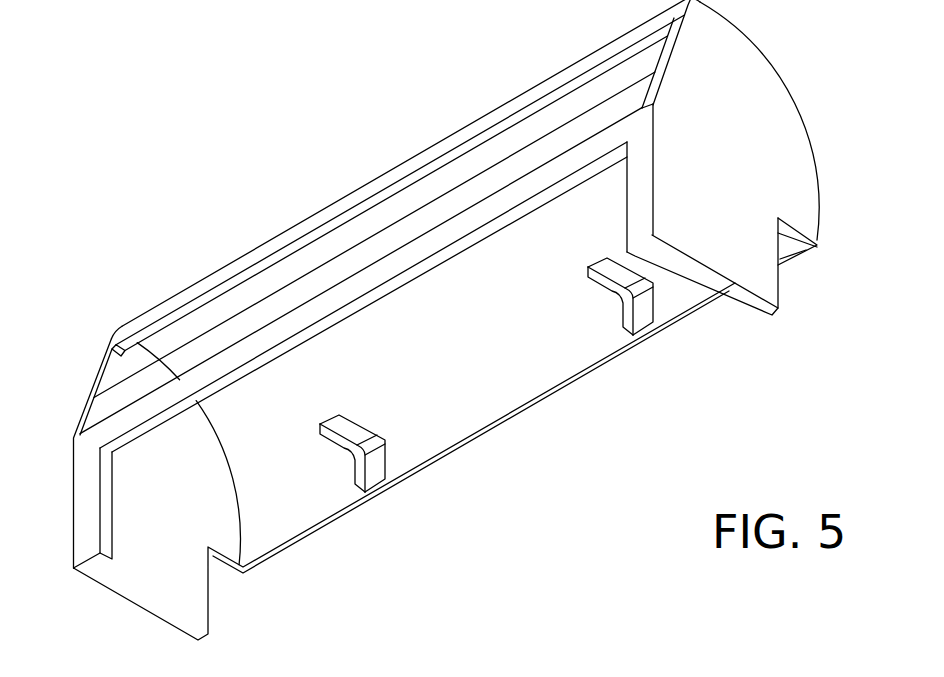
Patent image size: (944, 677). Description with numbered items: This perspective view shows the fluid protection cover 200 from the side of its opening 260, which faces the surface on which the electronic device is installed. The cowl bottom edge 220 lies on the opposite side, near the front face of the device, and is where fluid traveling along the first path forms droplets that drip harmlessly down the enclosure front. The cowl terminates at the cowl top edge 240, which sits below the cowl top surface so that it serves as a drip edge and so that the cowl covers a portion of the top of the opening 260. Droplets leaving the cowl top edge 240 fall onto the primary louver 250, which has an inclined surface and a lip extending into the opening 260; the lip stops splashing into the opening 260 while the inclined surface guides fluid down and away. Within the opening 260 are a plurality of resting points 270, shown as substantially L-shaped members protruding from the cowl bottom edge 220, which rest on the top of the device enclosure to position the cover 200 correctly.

The fluid protection cover 200 is at (104, 153).
The cowl bottom edge 220 is at (503, 423).
The cowl top edge 240 is at (413, 173).
The primary louver 250 is at (375, 283).
The opening 260 is at (285, 302).
The resting points 270 is at (637, 327).